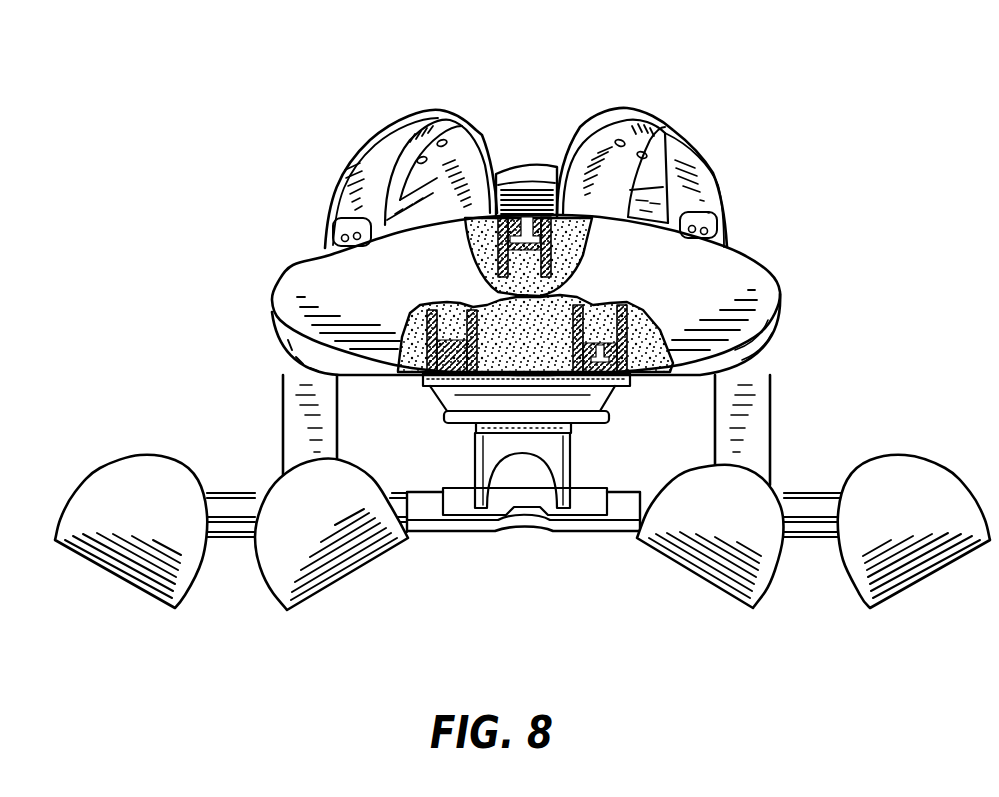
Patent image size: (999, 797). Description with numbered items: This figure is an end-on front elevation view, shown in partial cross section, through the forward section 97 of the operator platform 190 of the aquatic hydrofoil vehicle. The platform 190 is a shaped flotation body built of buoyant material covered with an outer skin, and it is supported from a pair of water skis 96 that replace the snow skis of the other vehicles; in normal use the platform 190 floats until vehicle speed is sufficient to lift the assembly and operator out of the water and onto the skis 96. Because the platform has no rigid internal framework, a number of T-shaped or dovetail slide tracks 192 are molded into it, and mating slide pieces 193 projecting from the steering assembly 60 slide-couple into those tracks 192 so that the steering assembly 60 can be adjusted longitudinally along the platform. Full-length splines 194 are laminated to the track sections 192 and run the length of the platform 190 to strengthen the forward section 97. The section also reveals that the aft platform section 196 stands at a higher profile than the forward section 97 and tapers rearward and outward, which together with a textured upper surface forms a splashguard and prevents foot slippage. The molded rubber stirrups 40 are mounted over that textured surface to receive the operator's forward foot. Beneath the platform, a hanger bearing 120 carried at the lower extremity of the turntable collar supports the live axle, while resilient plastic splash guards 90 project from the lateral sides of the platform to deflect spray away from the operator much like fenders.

The stirrups 40 is at (590, 126).
The aft platform section 196 is at (545, 166).
The platform 190 is at (742, 247).
The forward platform section 97 is at (779, 285).
The splines 194 is at (403, 315).
The T-shaped slide tracks 192 is at (400, 335).
The slide pieces 193 is at (423, 377).
The steering assembly 60 is at (615, 436).
The hanger bearing 120 is at (460, 537).
The water skis 96 is at (275, 593).
The splash guards 90 is at (850, 587).